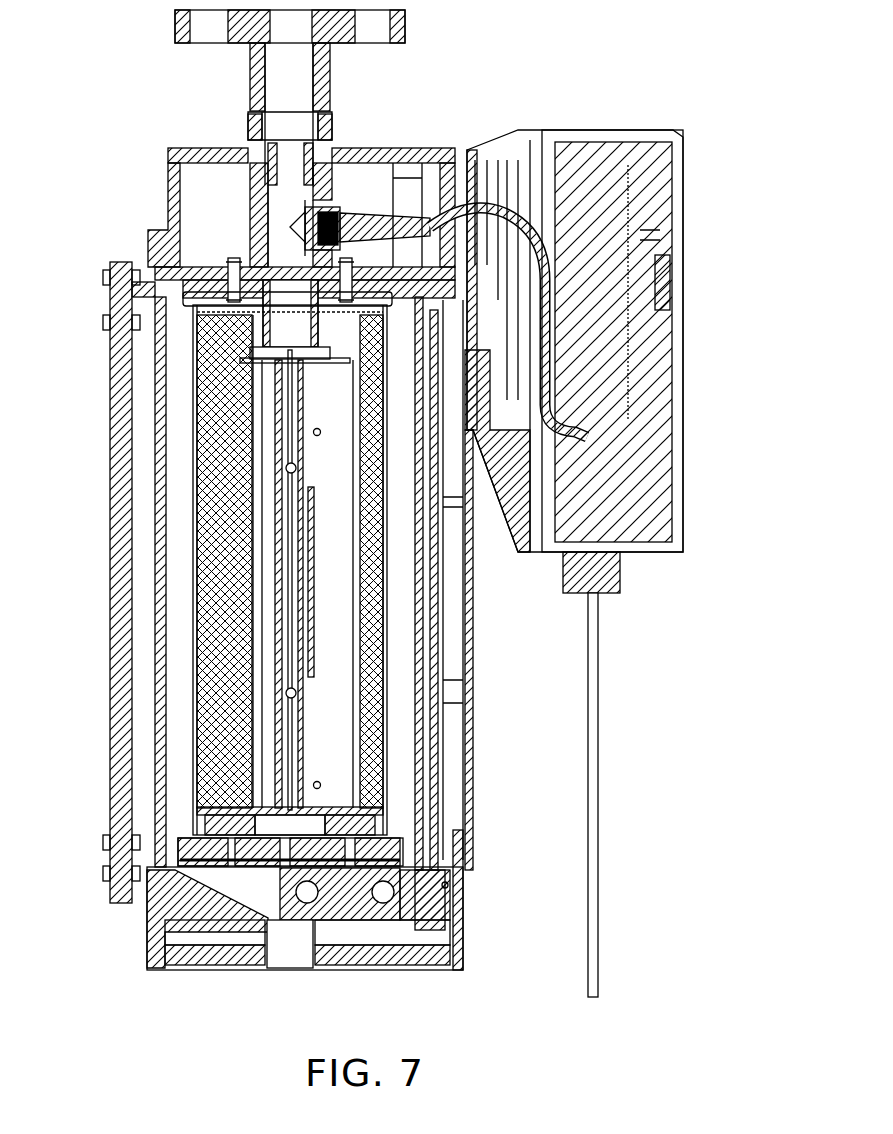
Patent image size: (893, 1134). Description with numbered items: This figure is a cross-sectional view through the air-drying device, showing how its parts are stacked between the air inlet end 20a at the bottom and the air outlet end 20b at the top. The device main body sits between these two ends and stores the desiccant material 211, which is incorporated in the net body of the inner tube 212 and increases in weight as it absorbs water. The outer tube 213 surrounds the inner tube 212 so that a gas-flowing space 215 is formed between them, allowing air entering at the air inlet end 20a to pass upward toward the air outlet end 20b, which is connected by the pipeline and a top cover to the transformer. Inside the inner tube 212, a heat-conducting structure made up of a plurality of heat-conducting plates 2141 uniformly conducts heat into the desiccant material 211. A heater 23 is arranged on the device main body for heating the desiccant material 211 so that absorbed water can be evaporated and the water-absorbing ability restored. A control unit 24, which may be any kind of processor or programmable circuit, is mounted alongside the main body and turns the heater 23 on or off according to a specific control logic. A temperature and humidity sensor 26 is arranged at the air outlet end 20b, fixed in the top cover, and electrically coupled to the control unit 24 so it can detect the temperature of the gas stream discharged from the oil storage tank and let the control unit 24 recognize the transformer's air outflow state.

The air inlet end 20a is at (139, 941).
The air outlet end 20b is at (212, 213).
The control unit 24 is at (693, 213).
The temperature and humidity sensor 26 is at (365, 205).
The desiccant material 211 is at (193, 357).
The inner tube 212 is at (193, 410).
The outer tube 213 is at (157, 468).
The gas-flowing space 215 is at (174, 543).
The heat-conducting plates 2141 is at (263, 630).
The heater 23 is at (313, 580).